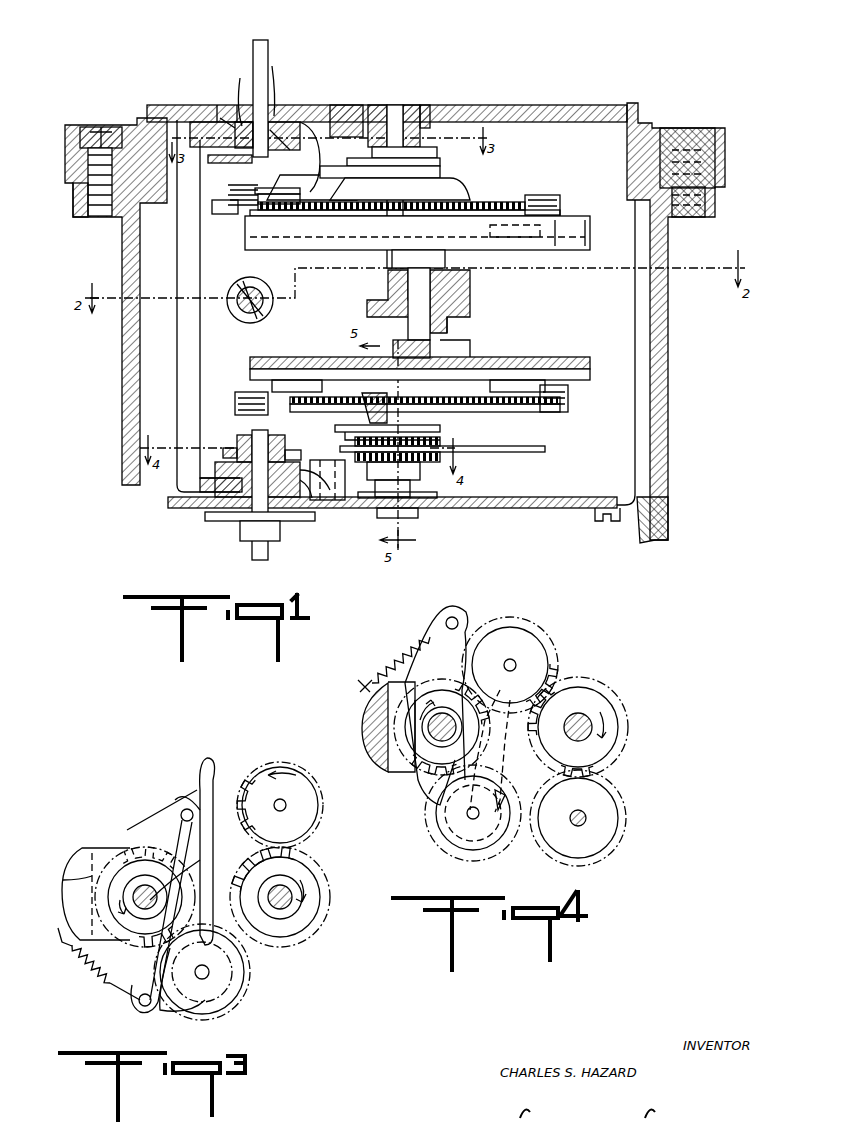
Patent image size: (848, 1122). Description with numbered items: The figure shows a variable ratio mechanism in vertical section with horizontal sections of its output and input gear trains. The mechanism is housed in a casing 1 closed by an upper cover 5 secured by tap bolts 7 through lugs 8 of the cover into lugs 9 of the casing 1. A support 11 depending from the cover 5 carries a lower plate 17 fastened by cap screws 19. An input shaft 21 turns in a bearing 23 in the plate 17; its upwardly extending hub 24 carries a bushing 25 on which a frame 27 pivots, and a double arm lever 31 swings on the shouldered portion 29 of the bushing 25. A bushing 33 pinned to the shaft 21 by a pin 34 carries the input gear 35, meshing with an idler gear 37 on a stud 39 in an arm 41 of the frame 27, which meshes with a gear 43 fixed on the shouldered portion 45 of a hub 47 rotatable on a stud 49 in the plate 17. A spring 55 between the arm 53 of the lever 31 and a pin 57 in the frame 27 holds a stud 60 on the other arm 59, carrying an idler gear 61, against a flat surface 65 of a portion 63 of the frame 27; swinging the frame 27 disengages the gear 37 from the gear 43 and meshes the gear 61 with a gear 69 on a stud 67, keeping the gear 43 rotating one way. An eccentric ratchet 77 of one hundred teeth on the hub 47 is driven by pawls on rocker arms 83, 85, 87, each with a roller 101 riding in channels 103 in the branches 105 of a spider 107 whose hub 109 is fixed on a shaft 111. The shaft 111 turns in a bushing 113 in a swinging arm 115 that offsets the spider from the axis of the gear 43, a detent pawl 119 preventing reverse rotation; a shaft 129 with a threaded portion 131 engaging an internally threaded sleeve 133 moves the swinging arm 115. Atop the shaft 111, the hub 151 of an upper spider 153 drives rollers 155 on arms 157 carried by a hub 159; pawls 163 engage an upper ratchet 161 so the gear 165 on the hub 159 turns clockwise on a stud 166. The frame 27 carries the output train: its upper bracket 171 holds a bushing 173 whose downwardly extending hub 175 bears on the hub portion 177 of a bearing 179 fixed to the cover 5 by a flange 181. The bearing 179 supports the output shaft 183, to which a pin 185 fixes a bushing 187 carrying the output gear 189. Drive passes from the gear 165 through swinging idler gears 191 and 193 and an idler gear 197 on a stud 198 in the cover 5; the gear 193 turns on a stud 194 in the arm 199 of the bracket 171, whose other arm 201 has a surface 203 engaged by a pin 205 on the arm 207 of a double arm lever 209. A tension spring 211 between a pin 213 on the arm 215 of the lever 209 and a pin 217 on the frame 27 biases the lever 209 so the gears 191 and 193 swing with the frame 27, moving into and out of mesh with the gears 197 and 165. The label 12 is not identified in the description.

In FIG. 1, the casing 1 is at (664, 378).
In FIG. 1, the upper cover 5 is at (574, 115).
In FIG. 1, the tap bolts 7 is at (94, 214).
In FIG. 1, the lugs of the cover 8 is at (72, 166).
In FIG. 1, the lugs on the casing 9 is at (75, 199).
In FIG. 1, the support 11 is at (637, 326).
In FIG. 1, the plate 12 is at (348, 440).
In FIG. 1, the lower plate 17 is at (537, 497).
In FIG. 1, the cap screws 19 is at (610, 528).
In FIG. 1, the input shaft 21 is at (252, 559).
In FIG. 4, the input shaft 21 is at (454, 734).
In FIG. 1, the bearing 23 is at (244, 524).
In FIG. 1, the hub 24 is at (272, 522).
In FIG. 1, the bushing 25 is at (232, 474).
In FIG. 1, the frame 27 is at (178, 368).
In FIG. 4, the frame 27 is at (366, 724).
In FIG. 3, the frame 27 is at (78, 850).
In FIG. 1, the shouldered portion 29 is at (292, 468).
In FIG. 1, the double arm lever 31 is at (304, 478).
In FIG. 4, the double arm lever 31 is at (426, 779).
In FIG. 1, the bushing 33 is at (228, 444).
In FIG. 4, the bushing 33 is at (458, 725).
In FIG. 1, the pin 34 is at (260, 436).
In FIG. 1, the input gear 35 is at (280, 442).
In FIG. 4, the input gear 35 is at (461, 676).
In FIG. 1, the idler gear 37 is at (320, 453).
In FIG. 4, the idler gear 37 is at (552, 638).
In FIG. 1, the stud 39 is at (296, 446).
In FIG. 4, the stud 39 is at (516, 668).
In FIG. 1, the arm 41 is at (312, 480).
In FIG. 4, the arm 41 is at (516, 667).
In FIG. 1, the gear 43 is at (440, 470).
In FIG. 4, the gear 43 is at (614, 696).
In FIG. 4, the shouldered portion 45 is at (582, 714).
In FIG. 1, the hub 47 is at (332, 424).
In FIG. 1, the stud 49 is at (433, 433).
In FIG. 4, the stud 49 is at (574, 740).
In FIG. 4, the arm 53 is at (438, 622).
In FIG. 4, the spring 55 is at (391, 648).
In FIG. 4, the pin 57 is at (360, 691).
In FIG. 4, the arm 59 is at (439, 824).
In FIG. 4, the stud 60 is at (467, 813).
In FIG. 4, the idler gear 61 is at (506, 844).
In FIG. 4, the portion 63 is at (515, 784).
In FIG. 4, the flat surface 65 is at (506, 780).
In FIG. 4, the stud 67 is at (583, 818).
In FIG. 4, the gear 69 is at (624, 812).
In FIG. 1, the ratchet 77 is at (488, 416).
In FIG. 1, the rocker arm 83 is at (565, 404).
In FIG. 1, the rocker arm 85 is at (235, 399).
In FIG. 1, the rocker arm 87 is at (408, 392).
In FIG. 1, the roller 101 is at (246, 380).
In FIG. 1, the channels 103 is at (314, 368).
In FIG. 1, the branches 105 is at (306, 356).
In FIG. 1, the spider 107 is at (485, 350).
In FIG. 1, the hub 109 is at (438, 350).
In FIG. 1, the shaft 111 is at (448, 285).
In FIG. 1, the bushing 113 is at (448, 333).
In FIG. 1, the swinging arm 115 is at (386, 288).
In FIG. 1, the detent pawl 119 is at (498, 444).
In FIG. 1, the shaft 129 is at (273, 307).
In FIG. 1, the threaded portion 131 is at (272, 320).
In FIG. 1, the internally threaded sleeve 133 is at (232, 326).
In FIG. 1, the hub 151 is at (436, 257).
In FIG. 1, the upper spider 153 is at (540, 248).
In FIG. 1, the rollers 155 is at (246, 232).
In FIG. 1, the arms 157 is at (334, 223).
In FIG. 1, the hub 159 is at (440, 188).
In FIG. 1, the upper ratchet 161 is at (300, 184).
In FIG. 1, the pawls 163 is at (226, 220).
In FIG. 1, the gear 165 is at (442, 156).
In FIG. 3, the gear 165 is at (324, 912).
In FIG. 1, the stud 166 is at (396, 108).
In FIG. 3, the stud 166 is at (284, 898).
In FIG. 1, the upper bracket 171 is at (190, 122).
In FIG. 3, the upper bracket 171 is at (150, 825).
In FIG. 1, the bushing 173 is at (250, 87).
In FIG. 3, the bushing 173 is at (200, 872).
In FIG. 1, the hub 175 is at (233, 99).
In FIG. 1, the hub portion 177 is at (276, 124).
In FIG. 3, the hub portion 177 is at (154, 910).
In FIG. 1, the bearing 179 is at (272, 76).
In FIG. 1, the flange 181 is at (226, 124).
In FIG. 1, the output shaft 183 is at (253, 53).
In FIG. 3, the output shaft 183 is at (180, 821).
In FIG. 1, the pin 185 is at (281, 195).
In FIG. 1, the bushing 187 is at (232, 184).
In FIG. 1, the output gear 189 is at (226, 164).
In FIG. 3, the output gear 189 is at (72, 875).
In FIG. 1, the swinging idler gear 191 is at (328, 138).
In FIG. 3, the swinging idler gear 191 is at (178, 772).
In FIG. 1, the swinging idler gear 193 is at (310, 168).
In FIG. 3, the swinging idler gear 193 is at (226, 1014).
In FIG. 3, the stud 194 is at (210, 972).
In FIG. 1, the idler gear 197 is at (364, 106).
In FIG. 4, the idler gear 197 is at (329, 782).
In FIG. 3, the idler gear 197 is at (328, 778).
In FIG. 3, the stud 198 is at (286, 806).
In FIG. 3, the arm 199 is at (182, 1014).
In FIG. 3, the arm 201 is at (252, 826).
In FIG. 3, the surface 203 is at (212, 770).
In FIG. 3, the pin 205 is at (181, 815).
In FIG. 1, the arm 207 is at (306, 132).
In FIG. 3, the arm 207 is at (175, 800).
In FIG. 3, the double arm lever 209 is at (106, 978).
In FIG. 3, the tension spring 211 is at (78, 952).
In FIG. 3, the pin 213 is at (138, 1005).
In FIG. 3, the arm 215 is at (136, 1014).
In FIG. 3, the pin 217 is at (62, 926).